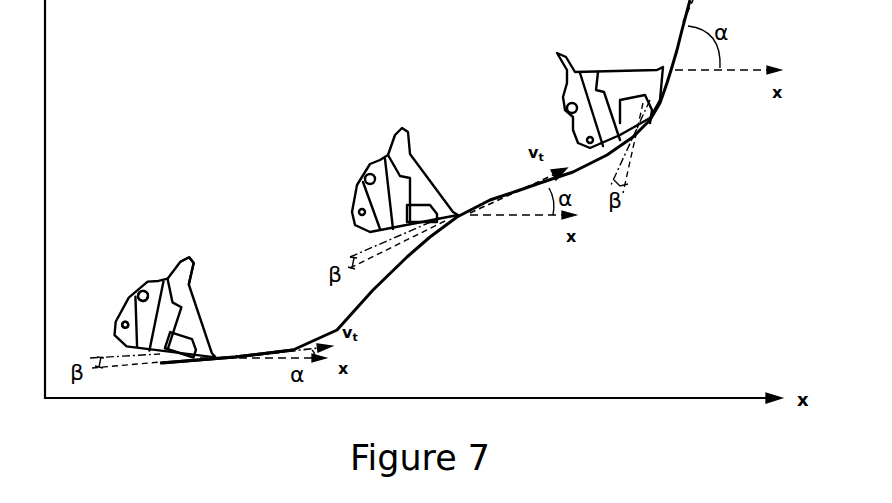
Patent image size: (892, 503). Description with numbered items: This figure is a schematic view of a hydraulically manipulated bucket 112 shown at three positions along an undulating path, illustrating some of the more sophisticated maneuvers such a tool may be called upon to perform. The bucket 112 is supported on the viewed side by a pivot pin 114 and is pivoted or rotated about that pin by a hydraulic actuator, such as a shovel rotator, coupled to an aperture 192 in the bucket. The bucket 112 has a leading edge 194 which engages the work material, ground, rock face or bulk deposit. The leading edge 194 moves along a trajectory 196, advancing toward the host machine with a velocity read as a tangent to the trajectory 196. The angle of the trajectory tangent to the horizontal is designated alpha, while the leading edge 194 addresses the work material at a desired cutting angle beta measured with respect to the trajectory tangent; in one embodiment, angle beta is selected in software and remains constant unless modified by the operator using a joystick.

The bucket 112 is at (195, 288).
The pivot pin 114 is at (148, 285).
The aperture 192 is at (118, 320).
The leading edge 194 is at (213, 353).
The trajectory 196 is at (377, 288).